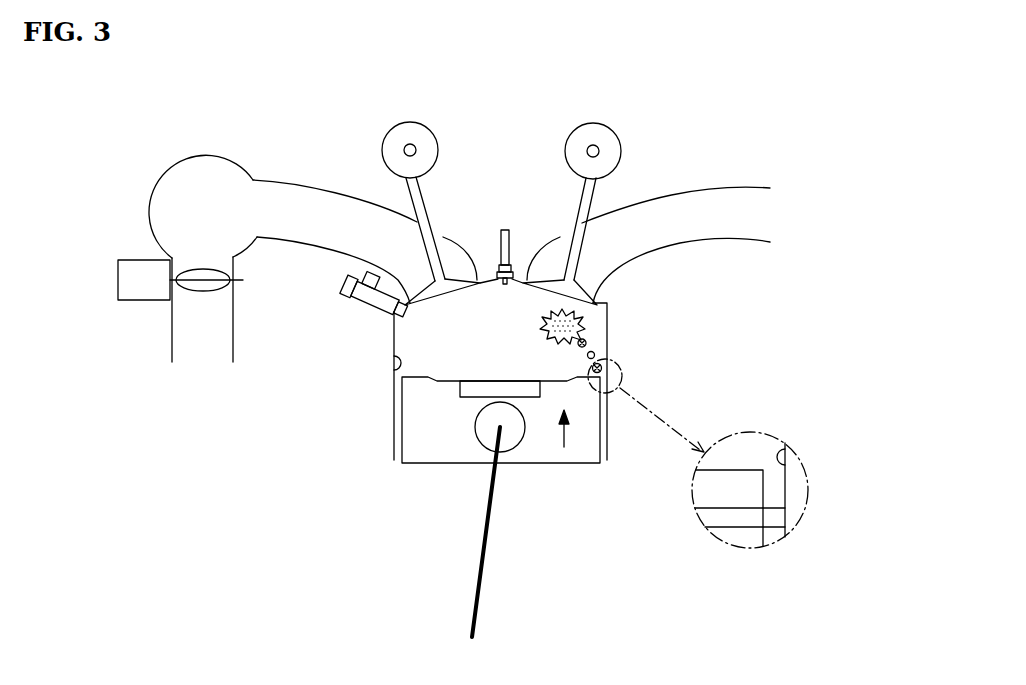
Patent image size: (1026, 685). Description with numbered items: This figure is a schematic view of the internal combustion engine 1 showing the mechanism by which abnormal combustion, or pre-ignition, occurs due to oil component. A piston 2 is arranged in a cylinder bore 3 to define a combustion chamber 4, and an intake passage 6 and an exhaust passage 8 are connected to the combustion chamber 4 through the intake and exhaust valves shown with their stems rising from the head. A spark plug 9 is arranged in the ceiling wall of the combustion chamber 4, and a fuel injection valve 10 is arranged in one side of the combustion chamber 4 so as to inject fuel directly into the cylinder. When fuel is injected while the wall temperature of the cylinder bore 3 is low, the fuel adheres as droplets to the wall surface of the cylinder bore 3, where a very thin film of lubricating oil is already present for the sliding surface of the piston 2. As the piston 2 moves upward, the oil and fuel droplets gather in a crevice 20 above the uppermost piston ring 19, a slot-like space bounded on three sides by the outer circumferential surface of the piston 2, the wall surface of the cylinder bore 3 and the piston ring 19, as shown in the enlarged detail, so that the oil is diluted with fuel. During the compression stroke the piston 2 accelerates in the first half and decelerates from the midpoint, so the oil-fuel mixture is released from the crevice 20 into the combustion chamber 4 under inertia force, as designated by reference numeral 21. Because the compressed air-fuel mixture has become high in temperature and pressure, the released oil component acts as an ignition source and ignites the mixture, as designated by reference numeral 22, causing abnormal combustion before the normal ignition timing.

The internal combustion engine 1 is at (712, 337).
The piston 2 is at (432, 455).
The cylinder bore 3 is at (395, 368).
The combustion chamber 4 is at (402, 337).
The intake passage 6 is at (295, 193).
The exhaust passage 8 is at (677, 200).
The spark plug 9 is at (508, 243).
The fuel injection valve 10 is at (363, 303).
The uppermost piston ring 19 is at (713, 517).
The crevice 20 is at (777, 500).
The release of oil-fuel mixture 21 is at (587, 342).
The ignition of air-fuel mixture 22 is at (540, 323).